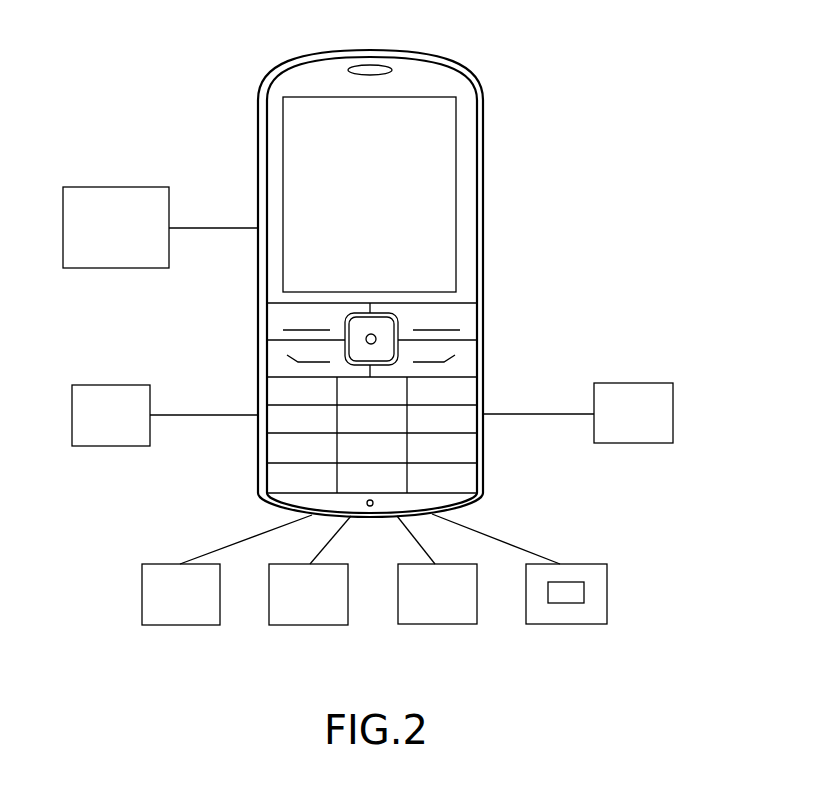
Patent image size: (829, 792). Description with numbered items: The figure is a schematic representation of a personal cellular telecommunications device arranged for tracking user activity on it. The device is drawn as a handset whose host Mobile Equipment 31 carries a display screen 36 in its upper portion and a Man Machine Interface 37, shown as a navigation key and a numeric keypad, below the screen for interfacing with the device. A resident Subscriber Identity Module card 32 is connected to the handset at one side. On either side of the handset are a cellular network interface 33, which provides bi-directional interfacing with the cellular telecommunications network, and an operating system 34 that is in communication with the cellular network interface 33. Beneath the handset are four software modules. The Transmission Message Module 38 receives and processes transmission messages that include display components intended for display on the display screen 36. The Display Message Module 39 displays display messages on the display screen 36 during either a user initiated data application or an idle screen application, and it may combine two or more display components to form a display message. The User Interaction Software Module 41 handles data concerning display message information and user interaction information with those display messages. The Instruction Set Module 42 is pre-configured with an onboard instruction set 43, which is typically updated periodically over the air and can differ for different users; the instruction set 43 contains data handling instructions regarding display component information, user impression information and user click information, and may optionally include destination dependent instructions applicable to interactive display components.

The host Mobile Equipment (ME) 31 is at (318, 51).
The Subscriber Identity Module (SIM) card 32 is at (112, 187).
The cellular network interface 33 is at (112, 385).
The operating system 34 is at (634, 383).
The display screen 36 is at (330, 141).
The Man Machine Interface (MMI) 37 is at (453, 342).
The Transmission Message Module (TMM) 38 is at (185, 625).
The Display Message Module (DMM) 39 is at (313, 625).
The User Interaction Software Module (UISM) 41 is at (442, 624).
The Instruction Set Module 42 is at (570, 624).
The instruction set 43 is at (585, 591).